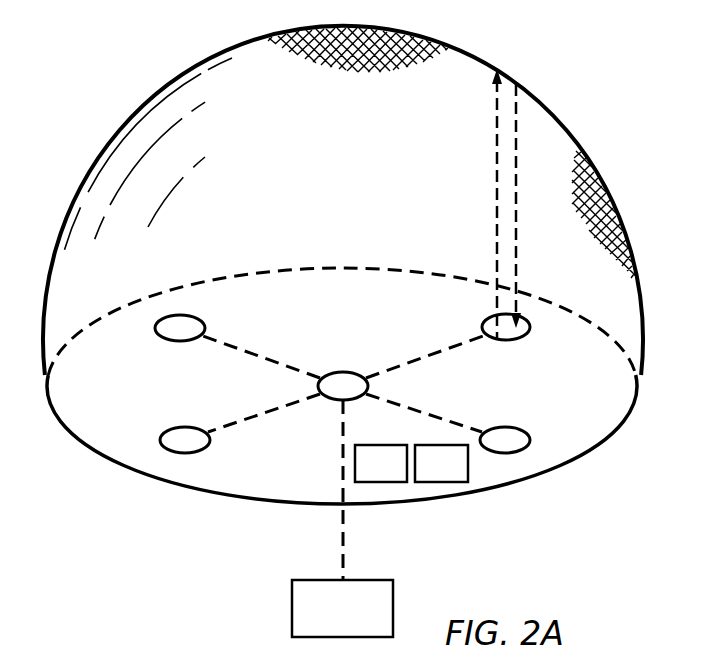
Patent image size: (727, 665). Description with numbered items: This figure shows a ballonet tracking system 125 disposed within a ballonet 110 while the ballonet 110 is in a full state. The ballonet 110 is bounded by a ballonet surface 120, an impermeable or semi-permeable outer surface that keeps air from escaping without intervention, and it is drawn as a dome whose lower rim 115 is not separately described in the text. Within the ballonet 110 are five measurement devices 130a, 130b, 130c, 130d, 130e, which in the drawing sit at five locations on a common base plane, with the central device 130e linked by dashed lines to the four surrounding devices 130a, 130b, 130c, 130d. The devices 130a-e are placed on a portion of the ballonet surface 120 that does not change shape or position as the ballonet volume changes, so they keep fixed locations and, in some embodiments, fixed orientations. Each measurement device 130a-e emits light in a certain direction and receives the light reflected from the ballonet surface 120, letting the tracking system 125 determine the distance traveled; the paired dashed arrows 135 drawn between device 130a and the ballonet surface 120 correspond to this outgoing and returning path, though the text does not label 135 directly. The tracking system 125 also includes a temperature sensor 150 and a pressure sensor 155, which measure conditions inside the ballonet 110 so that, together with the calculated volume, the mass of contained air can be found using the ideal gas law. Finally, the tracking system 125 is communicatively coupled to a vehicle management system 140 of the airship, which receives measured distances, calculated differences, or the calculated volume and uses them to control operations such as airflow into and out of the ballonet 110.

The ballonet 110 is at (130, 81).
The base 115 is at (575, 438).
The ballonet surface 120 is at (550, 119).
The ballonet tracking system 125 is at (350, 287).
The measurement device 130a is at (511, 338).
The measurement device 130b is at (511, 438).
The measurement device 130c is at (177, 438).
The measurement device 130d is at (177, 334).
The measurement device 130e is at (333, 380).
The light path 135 is at (494, 119).
The vehicle management system 140 is at (328, 622).
The temperature sensor 150 is at (427, 480).
The pressure sensor 155 is at (366, 480).